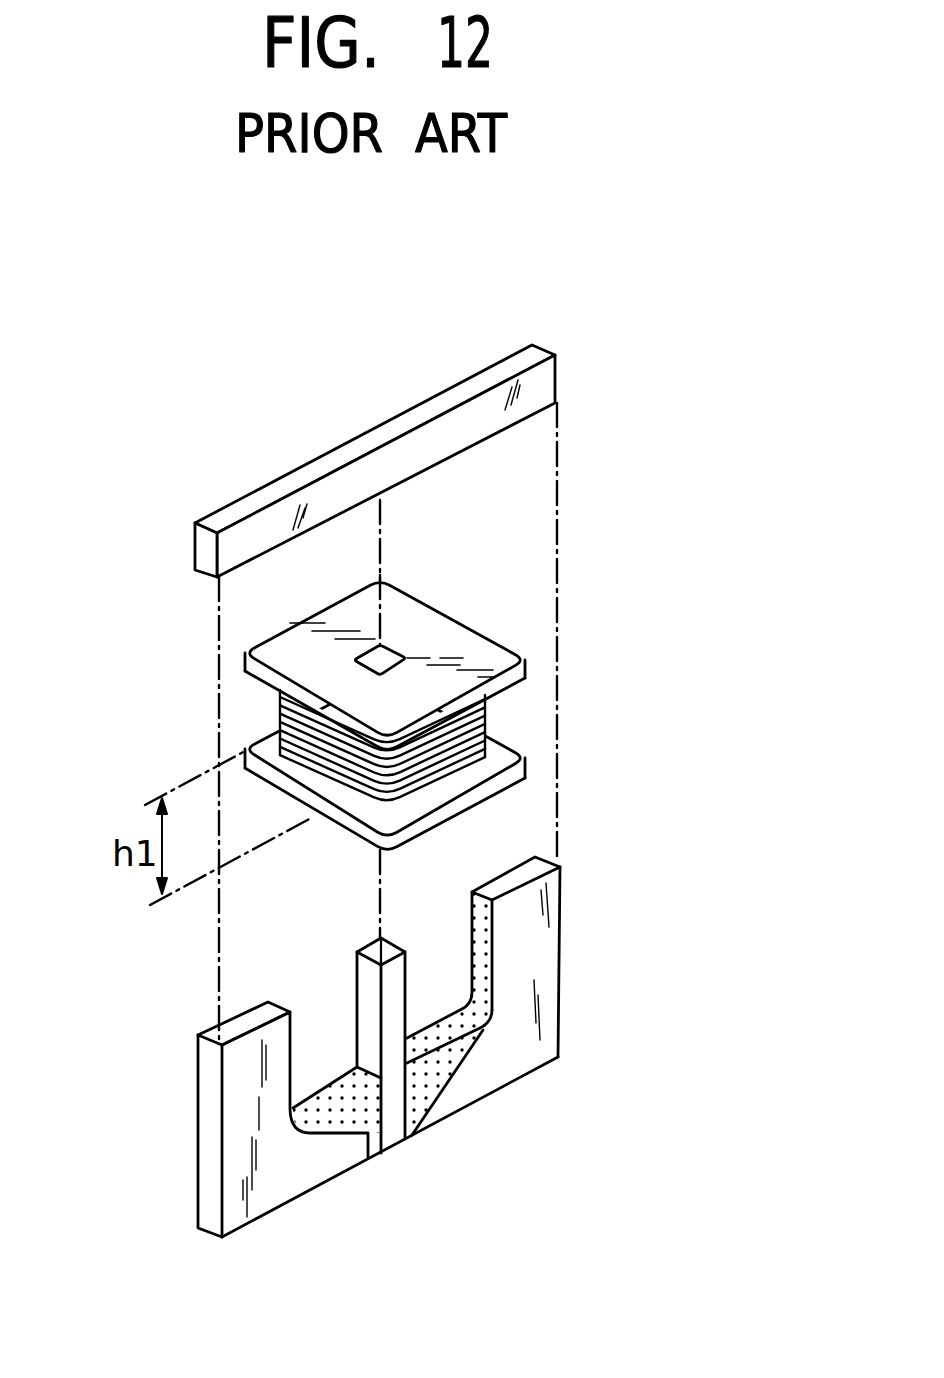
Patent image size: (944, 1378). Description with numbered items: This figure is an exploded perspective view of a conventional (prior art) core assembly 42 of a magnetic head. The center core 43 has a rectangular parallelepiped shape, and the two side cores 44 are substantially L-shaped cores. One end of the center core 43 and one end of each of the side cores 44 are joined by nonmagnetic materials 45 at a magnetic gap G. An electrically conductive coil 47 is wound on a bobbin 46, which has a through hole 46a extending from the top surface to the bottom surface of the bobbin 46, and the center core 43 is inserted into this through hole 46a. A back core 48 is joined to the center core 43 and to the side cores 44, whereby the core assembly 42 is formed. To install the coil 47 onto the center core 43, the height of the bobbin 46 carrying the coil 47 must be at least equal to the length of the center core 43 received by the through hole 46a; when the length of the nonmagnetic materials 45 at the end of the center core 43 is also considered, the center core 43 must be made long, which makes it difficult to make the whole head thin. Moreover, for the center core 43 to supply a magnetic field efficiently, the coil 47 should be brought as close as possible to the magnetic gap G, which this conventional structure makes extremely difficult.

The core assembly 42 is at (137, 633).
The center core 43 is at (393, 1002).
The side cores 44 is at (530, 930).
The nonmagnetic materials 45 is at (420, 1073).
The bobbin 46 is at (462, 630).
The through hole 46a is at (390, 652).
The electrically conductive coil 47 is at (487, 755).
The back core 48 is at (538, 383).
The magnetic gap G is at (410, 1130).